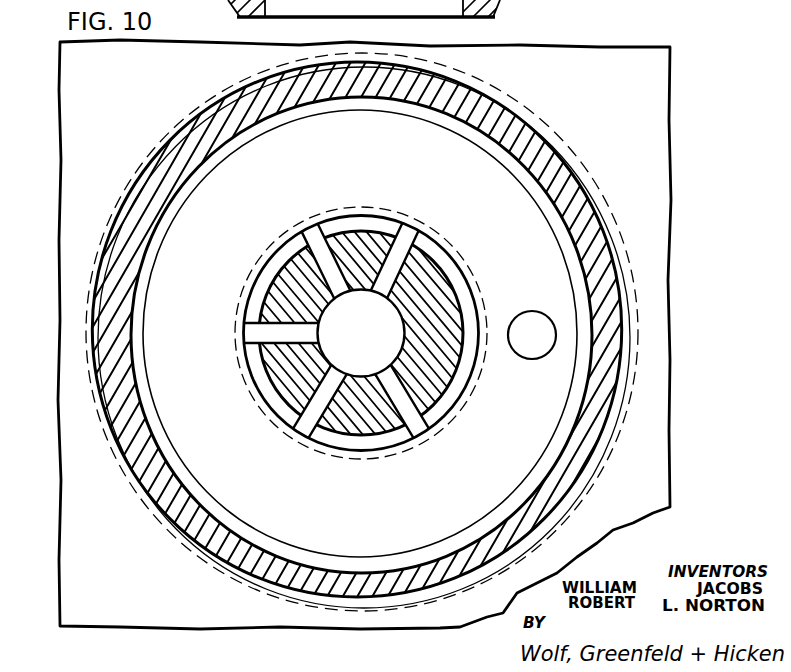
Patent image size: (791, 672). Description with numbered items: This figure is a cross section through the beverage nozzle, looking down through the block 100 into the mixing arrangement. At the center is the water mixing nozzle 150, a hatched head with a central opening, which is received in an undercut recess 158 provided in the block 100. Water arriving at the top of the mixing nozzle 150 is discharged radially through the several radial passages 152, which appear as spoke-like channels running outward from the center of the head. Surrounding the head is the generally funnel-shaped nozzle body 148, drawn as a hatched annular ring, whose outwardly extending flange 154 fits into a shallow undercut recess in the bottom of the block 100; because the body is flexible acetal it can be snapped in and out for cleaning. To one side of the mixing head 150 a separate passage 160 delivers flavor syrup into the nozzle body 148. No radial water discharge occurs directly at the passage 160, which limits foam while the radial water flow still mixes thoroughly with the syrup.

The block 100 is at (664, 101).
The nozzle body 148 is at (557, 177).
The water mixing nozzle 150 is at (357, 245).
The radial passages 152 is at (320, 258).
The outwardly extending flange 154 is at (597, 211).
The undercut recess 158 is at (447, 262).
The passage 160 is at (530, 360).